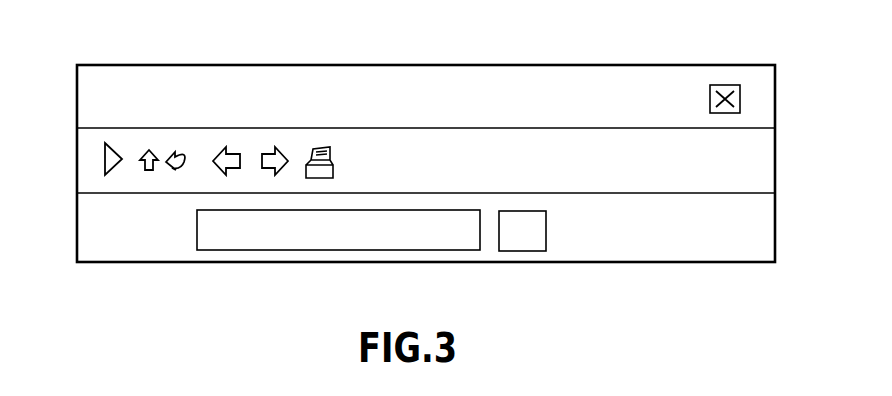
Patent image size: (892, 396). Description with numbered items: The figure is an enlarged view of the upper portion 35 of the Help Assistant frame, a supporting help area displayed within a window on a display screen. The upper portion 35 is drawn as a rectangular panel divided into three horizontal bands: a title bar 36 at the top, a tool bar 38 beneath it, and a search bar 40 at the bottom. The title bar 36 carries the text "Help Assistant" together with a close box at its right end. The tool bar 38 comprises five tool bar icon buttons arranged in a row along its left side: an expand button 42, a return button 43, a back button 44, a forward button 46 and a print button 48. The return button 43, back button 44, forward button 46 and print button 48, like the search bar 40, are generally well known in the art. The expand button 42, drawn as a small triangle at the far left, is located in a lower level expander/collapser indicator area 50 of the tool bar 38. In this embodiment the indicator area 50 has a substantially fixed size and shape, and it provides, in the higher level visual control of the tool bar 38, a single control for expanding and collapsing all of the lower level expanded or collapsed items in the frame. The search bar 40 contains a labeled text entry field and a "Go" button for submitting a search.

The upper portion 35 is at (553, 70).
The title bar 36 is at (200, 80).
The tool bar 38 is at (760, 165).
The search bar 40 is at (650, 265).
The expand button 42 is at (110, 158).
The return button 43 is at (164, 147).
The back button 44 is at (235, 156).
The forward button 46 is at (272, 147).
The print button 48 is at (337, 163).
The lower level expander/collapser indicator area 50 is at (97, 168).